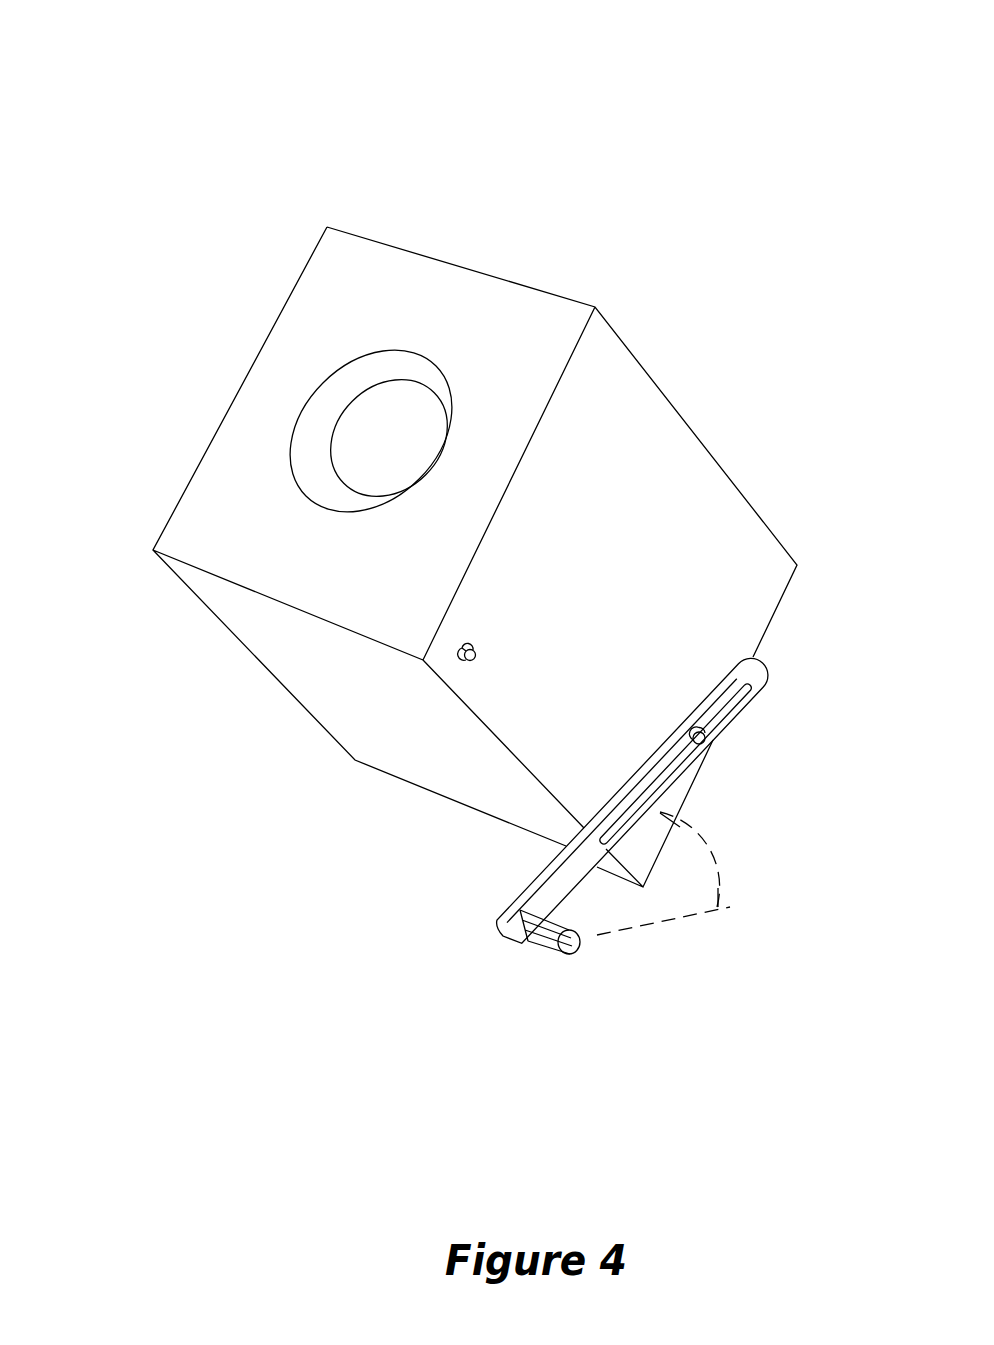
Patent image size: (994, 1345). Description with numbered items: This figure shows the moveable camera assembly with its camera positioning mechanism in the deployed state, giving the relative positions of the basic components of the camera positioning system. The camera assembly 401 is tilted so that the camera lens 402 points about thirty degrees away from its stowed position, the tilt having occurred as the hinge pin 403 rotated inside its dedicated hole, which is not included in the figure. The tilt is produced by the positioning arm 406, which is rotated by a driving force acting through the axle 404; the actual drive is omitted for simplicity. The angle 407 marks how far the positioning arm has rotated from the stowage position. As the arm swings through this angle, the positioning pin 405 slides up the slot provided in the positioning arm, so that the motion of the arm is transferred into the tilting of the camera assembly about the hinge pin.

The camera assembly 401 is at (363, 702).
The camera lens 402 is at (353, 432).
The hinge pin 403 is at (487, 670).
The axle 404 is at (587, 960).
The positioning pin 405 is at (722, 750).
The positioning arm 406 is at (757, 663).
The angle rotated from stowage position 407 is at (733, 872).